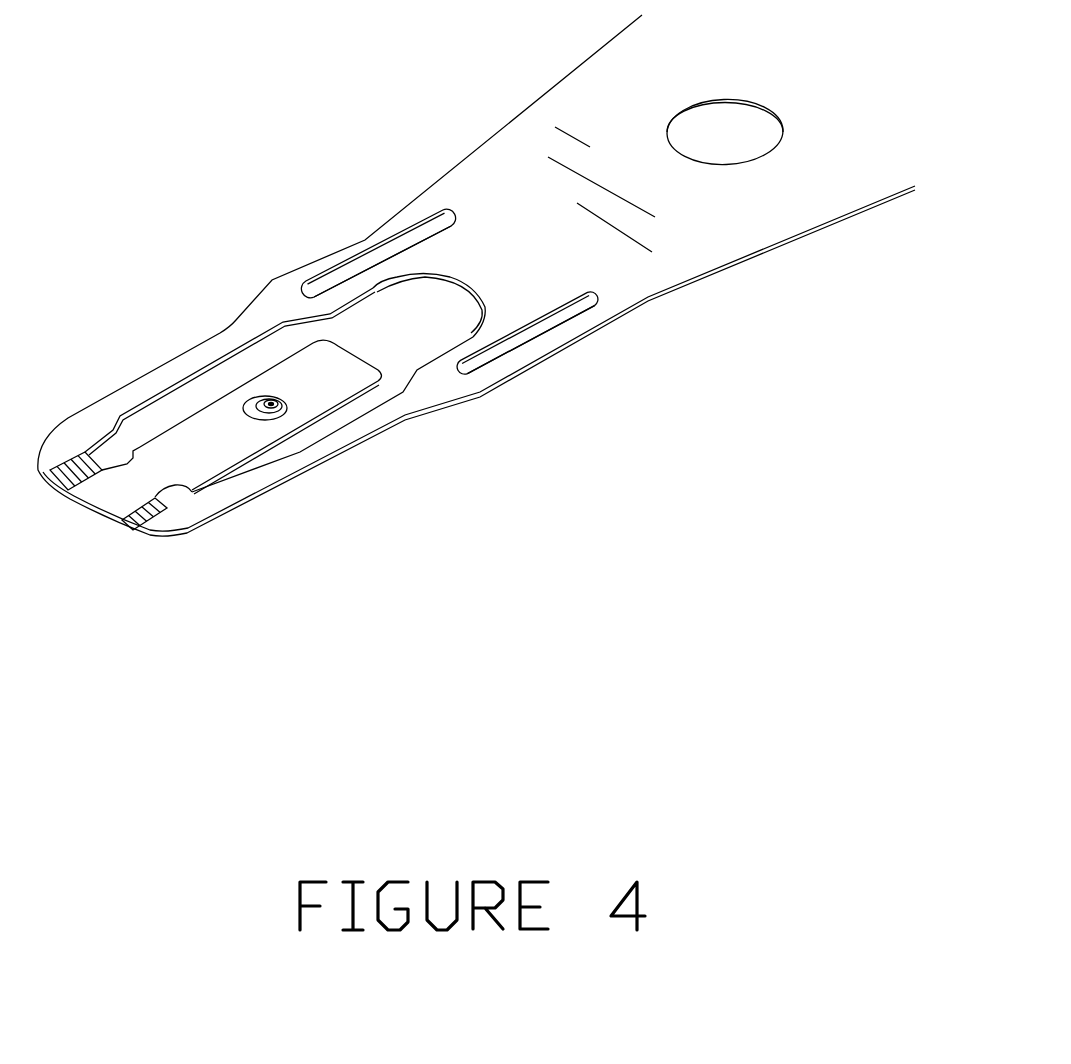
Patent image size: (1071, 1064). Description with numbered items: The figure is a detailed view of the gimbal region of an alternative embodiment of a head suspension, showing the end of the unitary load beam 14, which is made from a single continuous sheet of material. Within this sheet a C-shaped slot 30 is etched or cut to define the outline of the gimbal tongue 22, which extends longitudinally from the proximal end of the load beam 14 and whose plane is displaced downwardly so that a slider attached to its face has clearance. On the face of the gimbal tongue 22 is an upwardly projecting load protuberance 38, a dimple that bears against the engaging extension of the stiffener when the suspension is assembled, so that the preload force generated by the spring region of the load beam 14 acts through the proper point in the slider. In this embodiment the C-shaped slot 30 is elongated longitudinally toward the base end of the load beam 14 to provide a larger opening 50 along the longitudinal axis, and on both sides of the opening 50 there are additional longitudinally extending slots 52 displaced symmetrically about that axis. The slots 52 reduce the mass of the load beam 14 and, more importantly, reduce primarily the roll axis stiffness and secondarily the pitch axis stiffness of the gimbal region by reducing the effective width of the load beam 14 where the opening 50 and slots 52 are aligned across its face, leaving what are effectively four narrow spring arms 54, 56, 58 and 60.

The load beam 14 is at (643, 104).
The gimbal tongue 22 is at (212, 459).
The C-shaped slot 30 is at (233, 392).
The load protuberance 38 is at (265, 430).
The opening 50 is at (447, 309).
The longitudinally extending slots 52 is at (415, 232).
The spring arm 54 is at (522, 367).
The spring arm 56 is at (475, 338).
The spring arm 58 is at (367, 283).
The spring arm 60 is at (372, 228).